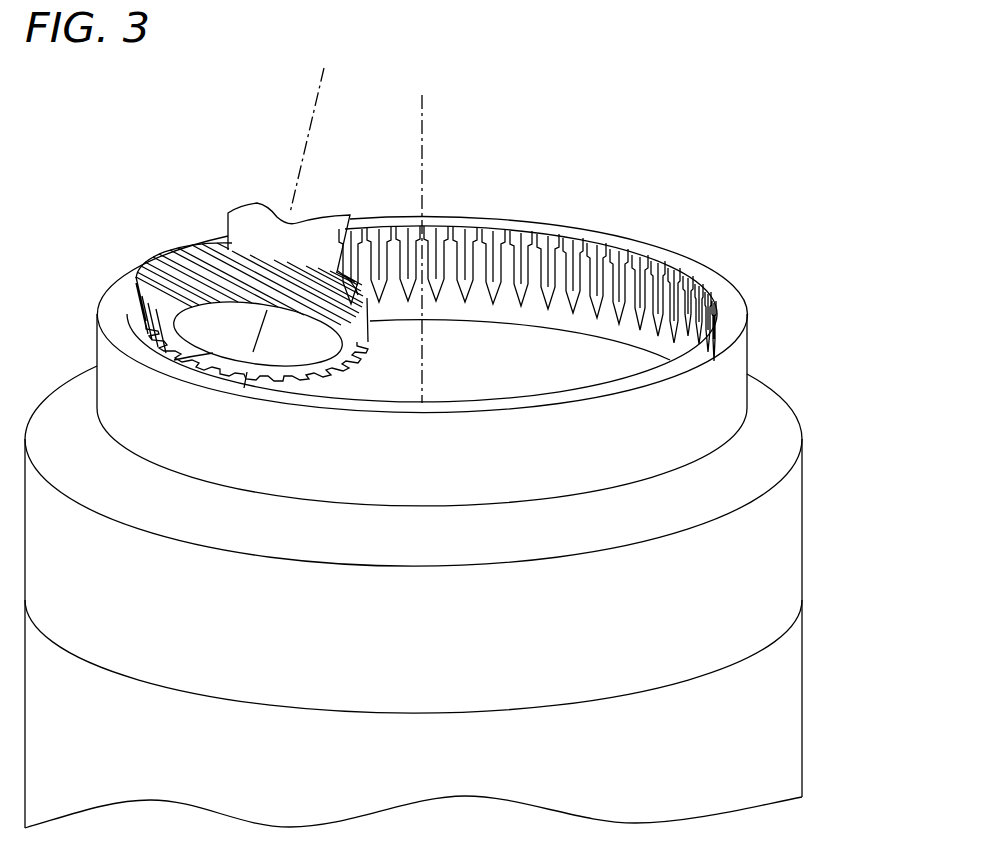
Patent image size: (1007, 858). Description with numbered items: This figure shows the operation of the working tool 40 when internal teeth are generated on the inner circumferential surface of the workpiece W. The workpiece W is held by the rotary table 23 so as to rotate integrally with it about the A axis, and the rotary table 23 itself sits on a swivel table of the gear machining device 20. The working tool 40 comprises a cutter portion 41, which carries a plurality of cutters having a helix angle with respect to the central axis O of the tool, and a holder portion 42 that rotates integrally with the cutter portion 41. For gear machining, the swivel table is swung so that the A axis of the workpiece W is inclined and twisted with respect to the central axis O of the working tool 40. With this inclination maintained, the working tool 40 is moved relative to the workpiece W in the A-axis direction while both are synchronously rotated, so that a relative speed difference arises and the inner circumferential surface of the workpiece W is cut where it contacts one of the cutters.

The workpiece holding device 20 is at (692, 168).
The rotary table 23 is at (787, 558).
The workpiece W is at (733, 282).
The A axis A is at (422, 110).
The central axis O is at (319, 100).
The working tool 40 is at (158, 147).
The cutter portion 41 is at (168, 243).
The holder portion 42 is at (210, 213).